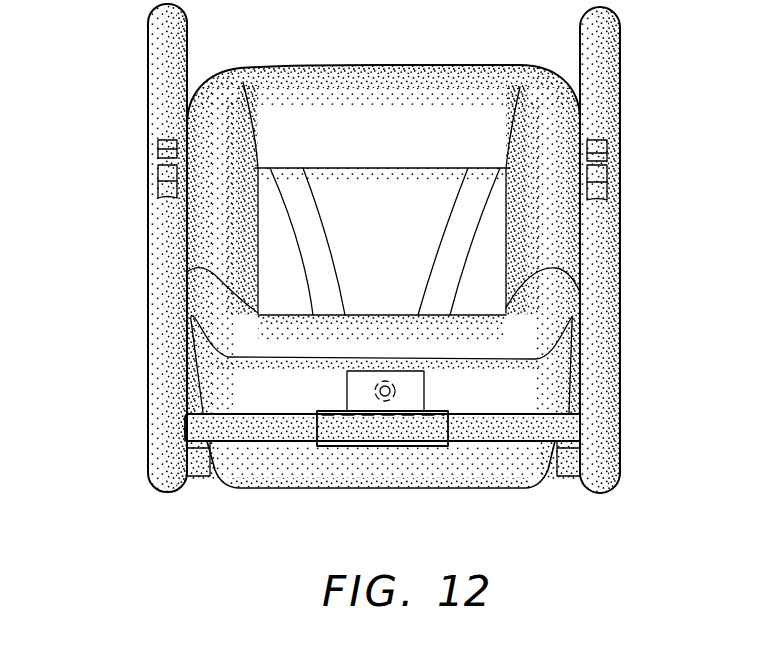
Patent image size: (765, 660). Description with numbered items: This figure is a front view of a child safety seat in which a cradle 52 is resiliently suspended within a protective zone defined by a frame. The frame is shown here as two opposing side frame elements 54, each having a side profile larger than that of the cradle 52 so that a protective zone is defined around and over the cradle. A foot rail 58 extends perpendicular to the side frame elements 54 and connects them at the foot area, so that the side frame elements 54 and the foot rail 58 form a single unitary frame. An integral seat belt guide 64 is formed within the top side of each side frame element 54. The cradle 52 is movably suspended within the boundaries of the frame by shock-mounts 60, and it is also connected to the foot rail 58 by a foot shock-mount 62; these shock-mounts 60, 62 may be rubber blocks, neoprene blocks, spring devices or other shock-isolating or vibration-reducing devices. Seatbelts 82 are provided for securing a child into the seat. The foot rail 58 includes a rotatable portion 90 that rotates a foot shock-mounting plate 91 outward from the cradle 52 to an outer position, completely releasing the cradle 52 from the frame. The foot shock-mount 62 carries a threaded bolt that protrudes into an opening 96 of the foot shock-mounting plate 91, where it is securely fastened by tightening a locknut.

The cradle 52 is at (376, 105).
The side frame element 54 is at (163, 67).
The foot rail 58 is at (263, 427).
The shock-mount 60 is at (198, 466).
The foot shock-mount 62 is at (379, 393).
The seat belt guide 64 is at (157, 146).
The seatbelts 82 is at (317, 247).
The rotatable portion 90 is at (388, 428).
The foot shock-mounting plate 91 is at (424, 398).
The opening 96 is at (393, 387).